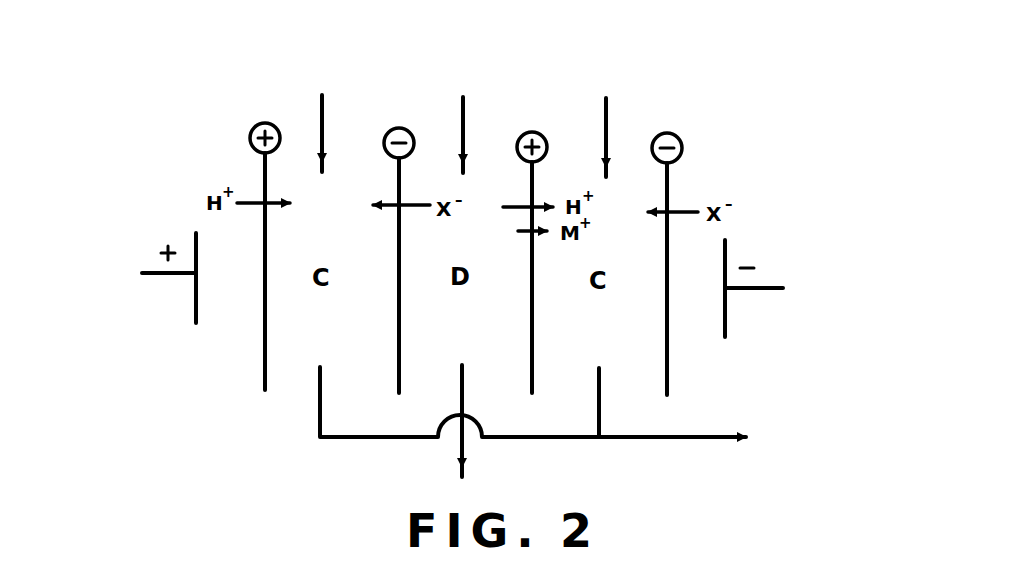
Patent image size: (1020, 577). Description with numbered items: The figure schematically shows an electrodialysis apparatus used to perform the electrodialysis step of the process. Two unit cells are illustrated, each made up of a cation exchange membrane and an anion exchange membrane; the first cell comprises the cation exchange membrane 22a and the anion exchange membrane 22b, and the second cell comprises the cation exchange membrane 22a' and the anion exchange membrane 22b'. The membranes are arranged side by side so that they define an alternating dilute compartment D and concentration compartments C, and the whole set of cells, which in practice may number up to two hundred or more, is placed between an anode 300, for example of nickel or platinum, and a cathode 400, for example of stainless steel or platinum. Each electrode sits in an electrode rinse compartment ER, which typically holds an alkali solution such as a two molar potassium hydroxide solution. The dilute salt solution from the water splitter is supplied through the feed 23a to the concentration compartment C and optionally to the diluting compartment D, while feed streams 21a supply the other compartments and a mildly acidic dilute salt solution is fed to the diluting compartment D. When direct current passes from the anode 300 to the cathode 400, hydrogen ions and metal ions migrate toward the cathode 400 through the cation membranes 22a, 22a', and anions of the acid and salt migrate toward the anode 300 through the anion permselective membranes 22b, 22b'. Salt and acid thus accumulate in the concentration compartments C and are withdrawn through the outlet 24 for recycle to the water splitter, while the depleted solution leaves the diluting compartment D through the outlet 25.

The anode 300 is at (196, 233).
The cathode 400 is at (725, 252).
The cation exchange membrane 22a is at (229, 256).
The anion exchange membrane 22b is at (373, 260).
The cation exchange membrane 22a' is at (502, 262).
The anion exchange membrane 22b' is at (632, 264).
The concentrate feed inlet 21a is at (322, 115).
The dilute salt solution supply 23a is at (463, 110).
The withdrawal line 24 is at (630, 440).
The diluate outlet 25 is at (462, 437).